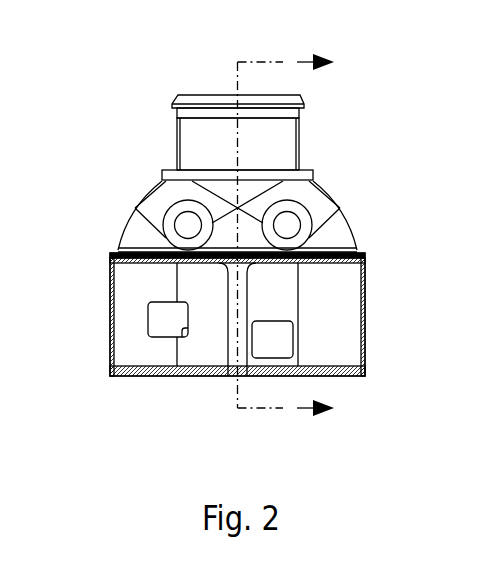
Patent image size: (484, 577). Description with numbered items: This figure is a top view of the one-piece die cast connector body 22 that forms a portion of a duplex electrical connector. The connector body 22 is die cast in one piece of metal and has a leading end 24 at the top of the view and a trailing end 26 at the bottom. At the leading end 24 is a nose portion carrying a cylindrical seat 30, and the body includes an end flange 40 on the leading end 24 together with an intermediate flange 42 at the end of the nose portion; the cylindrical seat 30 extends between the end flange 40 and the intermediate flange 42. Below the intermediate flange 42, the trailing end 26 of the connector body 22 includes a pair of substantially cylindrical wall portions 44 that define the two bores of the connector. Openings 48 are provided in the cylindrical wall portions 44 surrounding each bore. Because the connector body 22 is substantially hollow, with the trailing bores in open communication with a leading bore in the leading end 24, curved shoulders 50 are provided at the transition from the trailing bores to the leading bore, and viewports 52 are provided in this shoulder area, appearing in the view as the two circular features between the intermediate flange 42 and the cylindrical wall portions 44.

The one-piece die cast connector body 22 is at (121, 108).
The leading end 24 is at (197, 95).
The trailing end 26 is at (345, 377).
The cylindrical seat 30 is at (276, 153).
The end flange 40 is at (304, 107).
The intermediate flange 42 is at (313, 176).
The cylindrical wall portions 44 is at (153, 298).
The openings 48 is at (150, 320).
The curved shoulders 50 is at (135, 207).
The viewports 52 is at (293, 227).